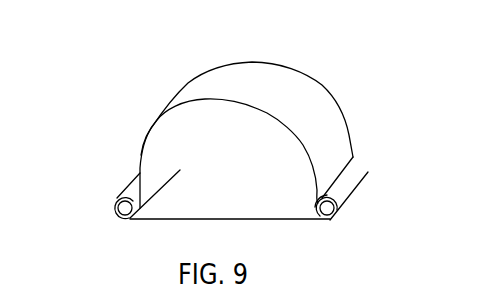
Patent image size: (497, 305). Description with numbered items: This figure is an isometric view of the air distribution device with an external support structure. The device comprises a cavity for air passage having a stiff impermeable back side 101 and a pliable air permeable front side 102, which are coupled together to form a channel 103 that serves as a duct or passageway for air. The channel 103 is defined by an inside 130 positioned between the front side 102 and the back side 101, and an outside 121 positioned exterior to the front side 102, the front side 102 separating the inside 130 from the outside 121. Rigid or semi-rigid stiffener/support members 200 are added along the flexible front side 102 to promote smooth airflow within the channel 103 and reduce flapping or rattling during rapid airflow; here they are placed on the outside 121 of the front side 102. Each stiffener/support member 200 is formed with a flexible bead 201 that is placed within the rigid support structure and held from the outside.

The outside 121 is at (176, 47).
The inside 130 is at (267, 114).
The front side 102 is at (338, 132).
The channel 103 is at (257, 199).
The back side 101 is at (189, 219).
The stiffener/support member 200 is at (106, 212).
The flexible bead 201 is at (330, 216).